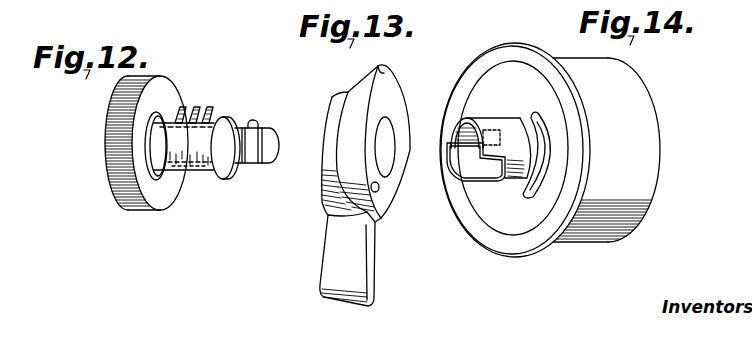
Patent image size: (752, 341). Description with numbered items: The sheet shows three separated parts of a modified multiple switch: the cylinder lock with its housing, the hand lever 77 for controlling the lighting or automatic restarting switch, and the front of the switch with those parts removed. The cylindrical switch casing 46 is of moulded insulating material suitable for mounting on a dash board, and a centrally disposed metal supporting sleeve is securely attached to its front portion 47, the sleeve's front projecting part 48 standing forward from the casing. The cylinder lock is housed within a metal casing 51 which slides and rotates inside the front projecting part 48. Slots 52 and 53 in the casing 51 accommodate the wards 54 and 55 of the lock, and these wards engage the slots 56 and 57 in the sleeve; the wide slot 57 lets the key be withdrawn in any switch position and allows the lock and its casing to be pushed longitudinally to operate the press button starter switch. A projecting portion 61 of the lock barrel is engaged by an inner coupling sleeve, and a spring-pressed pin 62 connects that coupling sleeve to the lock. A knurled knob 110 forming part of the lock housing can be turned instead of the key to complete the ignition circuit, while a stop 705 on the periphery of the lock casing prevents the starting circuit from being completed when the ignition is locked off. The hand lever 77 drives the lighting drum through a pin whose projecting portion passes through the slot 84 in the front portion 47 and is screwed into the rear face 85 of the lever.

In FIG. 12, the knurled knob 110 is at (106, 135).
In FIG. 12, the stop 705 is at (163, 176).
In FIG. 12, the slot 52 is at (206, 133).
In FIG. 12, the metal casing 51 is at (214, 128).
In FIG. 12, the ward 54 is at (196, 107).
In FIG. 12, the ward 55 is at (198, 172).
In FIG. 12, the slot 53 is at (226, 172).
In FIG. 12, the projecting portion of the barrel of the lock 61 is at (254, 150).
In FIG. 12, the pin 62 is at (277, 143).
In FIG. 13, the hand lever 77 is at (328, 255).
In FIG. 13, the rear face of the hand lever 85 is at (378, 192).
In FIG. 14, the cylindrical switch casing 46 is at (625, 108).
In FIG. 14, the front portion of the casing 47 is at (495, 83).
In FIG. 14, the front projecting part of the supporting sleeve 48 is at (516, 156).
In FIG. 14, the slot 56 is at (456, 126).
In FIG. 14, the wide slot 57 is at (462, 176).
In FIG. 14, the slot 84 is at (546, 168).